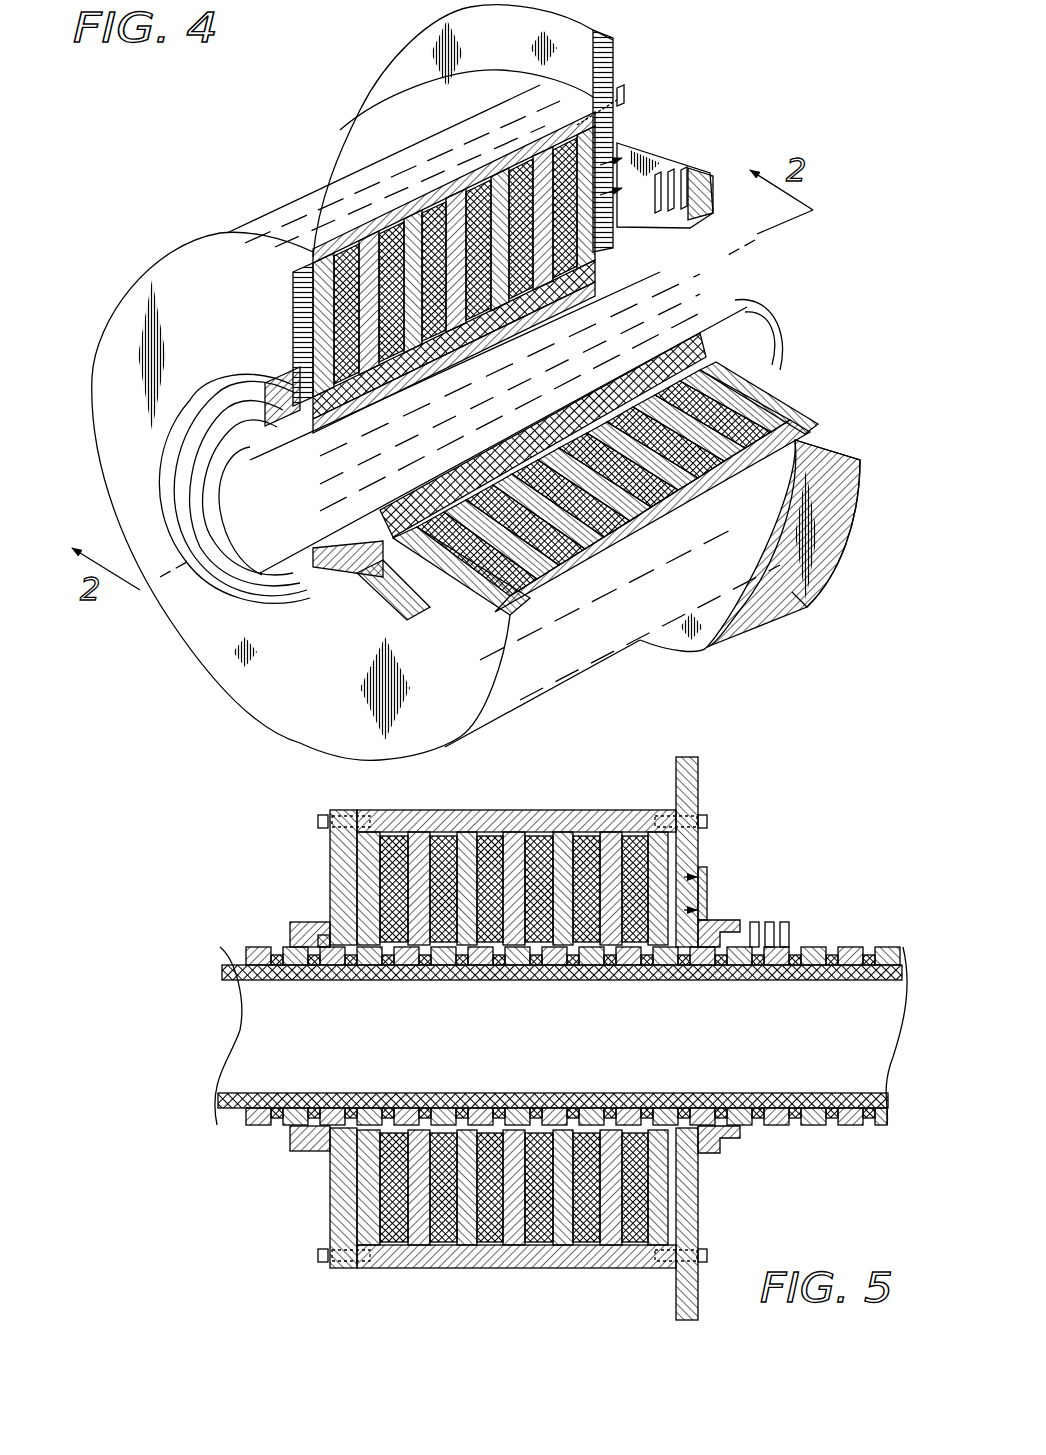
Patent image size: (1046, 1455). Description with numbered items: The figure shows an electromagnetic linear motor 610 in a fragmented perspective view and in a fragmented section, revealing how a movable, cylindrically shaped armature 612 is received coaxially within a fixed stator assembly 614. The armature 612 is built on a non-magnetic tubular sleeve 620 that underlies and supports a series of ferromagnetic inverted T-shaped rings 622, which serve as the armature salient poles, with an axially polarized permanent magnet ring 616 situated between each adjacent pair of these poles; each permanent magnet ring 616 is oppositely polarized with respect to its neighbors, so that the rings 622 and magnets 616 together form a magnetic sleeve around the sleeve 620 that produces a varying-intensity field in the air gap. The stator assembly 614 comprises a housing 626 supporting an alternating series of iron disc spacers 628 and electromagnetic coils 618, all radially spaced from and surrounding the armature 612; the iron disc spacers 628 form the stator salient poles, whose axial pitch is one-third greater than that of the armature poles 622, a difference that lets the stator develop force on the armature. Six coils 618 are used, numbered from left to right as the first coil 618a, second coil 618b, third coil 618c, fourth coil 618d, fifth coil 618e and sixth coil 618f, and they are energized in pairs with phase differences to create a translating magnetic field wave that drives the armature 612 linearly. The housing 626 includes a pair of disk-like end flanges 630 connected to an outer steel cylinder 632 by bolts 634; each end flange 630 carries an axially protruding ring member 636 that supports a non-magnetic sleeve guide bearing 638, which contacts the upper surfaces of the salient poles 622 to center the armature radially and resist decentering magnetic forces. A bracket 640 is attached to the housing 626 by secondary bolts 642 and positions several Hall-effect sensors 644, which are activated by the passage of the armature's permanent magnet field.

In FIG. 4, the electromagnetic linear motor 610 is at (775, 60).
In FIG. 5, the electromagnetic linear motor 610 is at (160, 836).
In FIG. 4, the armature 612 is at (668, 298).
In FIG. 5, the armature 612 is at (222, 1053).
In FIG. 4, the stator assembly 614 is at (180, 633).
In FIG. 5, the stator assembly 614 is at (584, 808).
In FIG. 5, the permanent magnet rings 616 is at (642, 975).
In FIG. 4, the electromagnetic coils 618 is at (592, 140).
In FIG. 5, the first coil 618a is at (393, 833).
In FIG. 5, the second electromagnetic coil 618b is at (443, 833).
In FIG. 5, the third coil 618c is at (497, 833).
In FIG. 5, the fourth electromagnetic coil 618d is at (553, 833).
In FIG. 5, the fifth electromagnetic coil 618e is at (603, 833).
In FIG. 5, the sixth electromagnetic coil 618f is at (655, 833).
In FIG. 4, the non-magnetic tubular sleeve 620 is at (290, 593).
In FIG. 5, the non-magnetic tubular sleeve 620 is at (232, 993).
In FIG. 4, the inverted T-shaped rings 622 is at (572, 282).
In FIG. 5, the inverted T-shaped rings 622 is at (803, 947).
In FIG. 4, the housing 626 is at (207, 230).
In FIG. 5, the housing 626 is at (705, 783).
In FIG. 4, the iron disc spacers 628 is at (320, 336).
In FIG. 4, the end flanges 630 is at (317, 727).
In FIG. 5, the end flanges 630 is at (330, 862).
In FIG. 4, the outer steel cylinder 632 is at (608, 645).
In FIG. 5, the outer steel cylinder 632 is at (495, 1270).
In FIG. 4, the bolts 634 is at (622, 95).
In FIG. 5, the bolts 634 is at (318, 822).
In FIG. 5, the axially protruding ring member 636 is at (328, 935).
In FIG. 5, the sleeve guide bearing 638 is at (283, 942).
In FIG. 4, the bracket 640 is at (640, 150).
In FIG. 5, the bracket 640 is at (760, 927).
In FIG. 5, the secondary bolts 642 is at (708, 905).
In FIG. 4, the Hall-effect sensors 644 is at (663, 187).
In FIG. 5, the Hall-effect sensors 644 is at (765, 925).